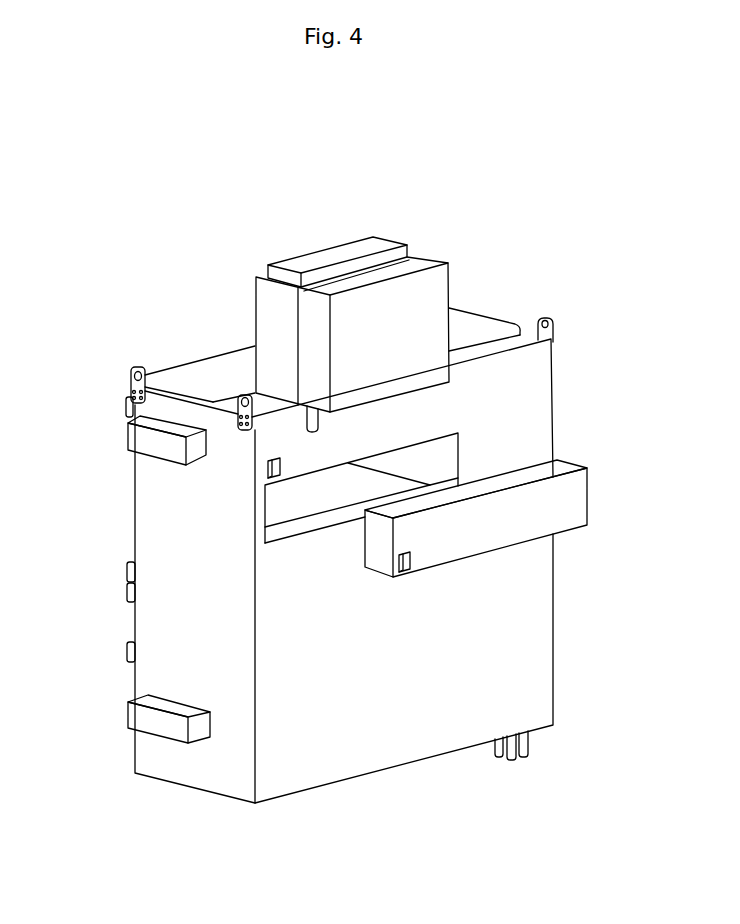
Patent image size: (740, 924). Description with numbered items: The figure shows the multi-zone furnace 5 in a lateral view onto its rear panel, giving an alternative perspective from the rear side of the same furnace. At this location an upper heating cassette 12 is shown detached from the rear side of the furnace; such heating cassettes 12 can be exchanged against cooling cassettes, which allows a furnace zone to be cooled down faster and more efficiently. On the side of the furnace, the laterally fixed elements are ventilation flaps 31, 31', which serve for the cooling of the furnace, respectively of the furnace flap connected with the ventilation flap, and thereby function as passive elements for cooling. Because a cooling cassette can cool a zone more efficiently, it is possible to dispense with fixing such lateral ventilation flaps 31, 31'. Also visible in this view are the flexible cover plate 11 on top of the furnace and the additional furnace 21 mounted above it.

The multi-zone furnace 5 is at (175, 315).
The flexible cover plate 11 is at (477, 335).
The heating cassette 12 is at (555, 472).
The additional furnace 21 is at (340, 245).
The ventilation flap 31 is at (127, 719).
The ventilation flap 31' is at (122, 440).